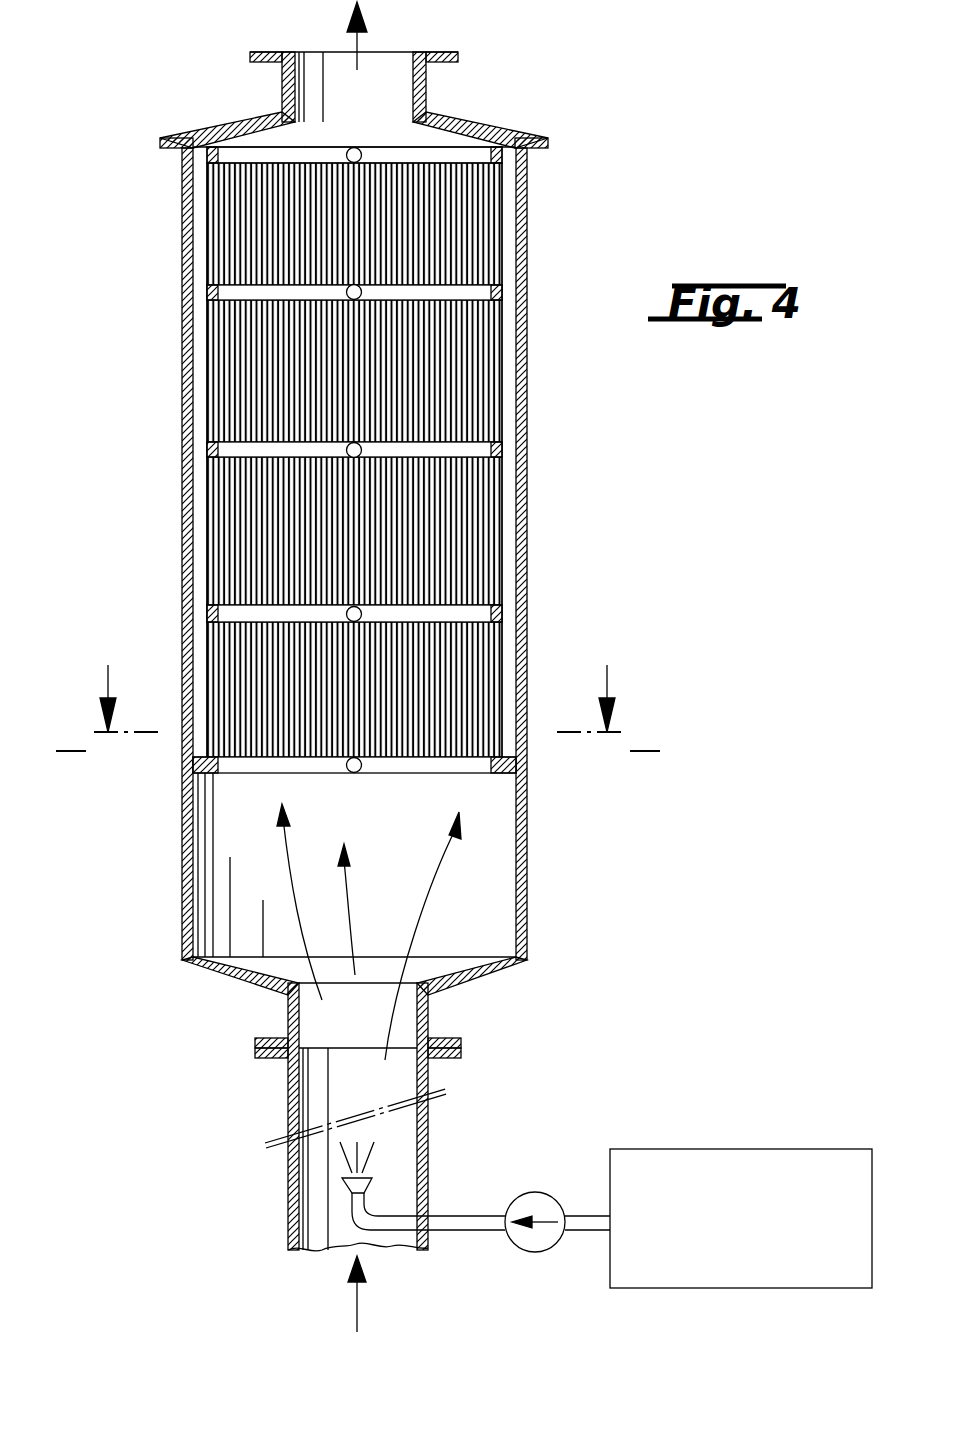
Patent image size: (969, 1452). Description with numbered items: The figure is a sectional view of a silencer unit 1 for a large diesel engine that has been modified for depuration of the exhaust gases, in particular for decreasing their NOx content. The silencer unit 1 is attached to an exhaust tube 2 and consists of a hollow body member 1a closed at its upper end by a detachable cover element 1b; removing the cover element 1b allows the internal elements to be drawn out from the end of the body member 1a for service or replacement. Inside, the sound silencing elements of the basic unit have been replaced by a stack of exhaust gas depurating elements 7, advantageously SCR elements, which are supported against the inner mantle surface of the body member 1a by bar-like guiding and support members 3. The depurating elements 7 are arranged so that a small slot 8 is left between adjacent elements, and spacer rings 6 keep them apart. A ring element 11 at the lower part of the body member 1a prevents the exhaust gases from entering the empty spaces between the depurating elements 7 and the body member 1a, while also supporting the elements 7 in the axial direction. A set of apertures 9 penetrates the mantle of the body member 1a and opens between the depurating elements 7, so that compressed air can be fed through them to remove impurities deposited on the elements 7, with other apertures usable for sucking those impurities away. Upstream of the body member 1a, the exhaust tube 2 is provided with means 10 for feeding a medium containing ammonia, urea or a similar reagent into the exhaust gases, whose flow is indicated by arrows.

The silencer unit 1 is at (136, 388).
The hollow body member 1a is at (528, 883).
The detachable cover element 1b is at (480, 128).
The exhaust tube 2 is at (288, 1210).
The bar-like guiding and support members 3 is at (195, 553).
The spacer rings 6 is at (186, 293).
The exhaust gas depurating elements 7 is at (480, 215).
The slot 8 is at (478, 290).
The apertures 9 is at (354, 147).
The means for feeding a medium containing ammonia, urea or the like reagent 10 is at (720, 1165).
The ring element 11 is at (185, 774).